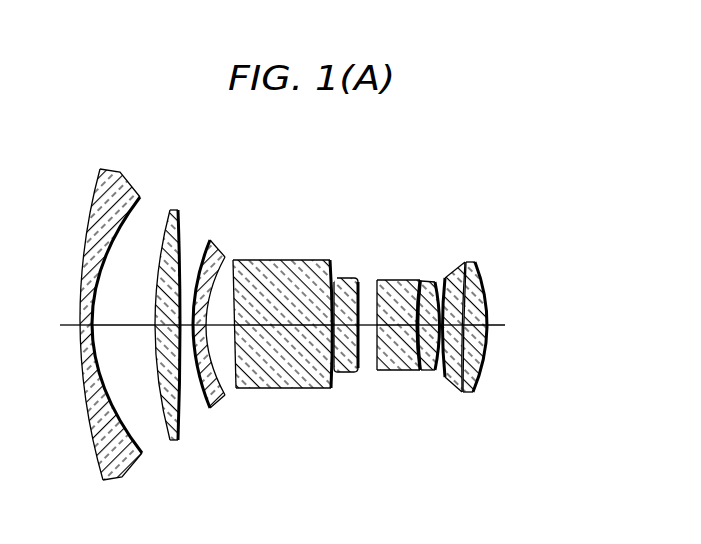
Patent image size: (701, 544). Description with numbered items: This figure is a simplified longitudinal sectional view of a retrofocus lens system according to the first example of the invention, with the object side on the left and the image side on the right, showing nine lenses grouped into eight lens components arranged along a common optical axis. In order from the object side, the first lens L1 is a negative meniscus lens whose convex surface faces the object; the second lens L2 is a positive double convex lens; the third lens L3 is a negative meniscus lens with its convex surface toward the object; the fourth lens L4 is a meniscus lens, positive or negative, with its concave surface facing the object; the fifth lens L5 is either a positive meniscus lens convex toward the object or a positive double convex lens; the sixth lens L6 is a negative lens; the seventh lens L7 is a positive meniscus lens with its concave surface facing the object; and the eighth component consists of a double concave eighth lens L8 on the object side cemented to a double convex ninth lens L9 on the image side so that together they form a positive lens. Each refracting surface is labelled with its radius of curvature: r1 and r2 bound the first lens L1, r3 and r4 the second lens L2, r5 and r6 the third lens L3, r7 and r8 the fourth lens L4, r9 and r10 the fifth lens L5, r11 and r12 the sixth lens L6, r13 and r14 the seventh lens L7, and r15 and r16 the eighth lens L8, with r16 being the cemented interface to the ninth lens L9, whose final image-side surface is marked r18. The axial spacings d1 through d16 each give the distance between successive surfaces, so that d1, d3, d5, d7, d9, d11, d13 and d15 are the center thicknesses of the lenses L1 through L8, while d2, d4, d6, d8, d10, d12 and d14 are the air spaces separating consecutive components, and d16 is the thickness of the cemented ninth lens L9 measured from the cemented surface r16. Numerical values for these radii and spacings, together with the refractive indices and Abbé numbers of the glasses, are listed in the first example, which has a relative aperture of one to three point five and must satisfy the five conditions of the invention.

The first lens L1 is at (117, 298).
The second lens L2 is at (172, 300).
The third lens L3 is at (226, 295).
The fourth lens L4 is at (282, 287).
The fifth lens L5 is at (360, 286).
The sixth lens L6 is at (409, 283).
The seventh lens L7 is at (458, 282).
The eighth lens L8 is at (493, 321).
The ninth lens L9 is at (513, 327).
The radius of curvature of first refracting surface r1 is at (102, 181).
The radius of curvature of second refracting surface r2 is at (139, 198).
The radius of curvature of third refracting surface r3 is at (168, 232).
The radius of curvature of fourth refracting surface r4 is at (179, 234).
The radius of curvature of fifth refracting surface r5 is at (197, 250).
The radius of curvature of sixth refracting surface r6 is at (228, 258).
The radius of curvature of seventh refracting surface r7 is at (252, 260).
The radius of curvature of eighth refracting surface r8 is at (327, 262).
The radius of curvature of ninth refracting surface r9 is at (335, 278).
The radius of curvature of tenth refracting surface r10 is at (356, 277).
The radius of curvature of eleventh refracting surface r11 is at (380, 280).
The radius of curvature of twelfth refracting surface r12 is at (417, 280).
The radius of curvature of thirteenth refracting surface r13 is at (432, 281).
The radius of curvature of fourteenth refracting surface r14 is at (440, 280).
The radius of curvature of fifteenth refracting surface r15 is at (452, 278).
The radius of curvature of sixteenth refracting surface r16 is at (466, 298).
The radius of curvature of eighteenth refracting surface r18 is at (489, 325).
The spacing between first and second lens surfaces d1 is at (80, 337).
The spacing between second and third lens surfaces d2 is at (123, 328).
The spacing between third and fourth lens surfaces d3 is at (163, 322).
The spacing between fourth and fifth lens surfaces d4 is at (160, 345).
The spacing between fifth and sixth lens surfaces d5 is at (190, 342).
The spacing between sixth and seventh lens surfaces d6 is at (223, 322).
The spacing between seventh and eighth lens surfaces d7 is at (284, 327).
The spacing between eighth and ninth lens surfaces d8 is at (329, 315).
The spacing between ninth and tenth lens surfaces d9 is at (333, 329).
The spacing between tenth and eleventh lens surfaces d10 is at (366, 330).
The spacing between eleventh and twelfth lens surfaces d11 is at (417, 320).
The spacing between twelfth and thirteenth lens surfaces d12 is at (418, 328).
The spacing between thirteenth and fourteenth lens surfaces d13 is at (430, 372).
The spacing between fourteenth and fifteenth lens surfaces d14 is at (441, 378).
The spacing between fifteenth and sixteenth lens surfaces d15 is at (466, 386).
The spacing between sixteenth and seventeenth lens surfaces d16 is at (487, 352).